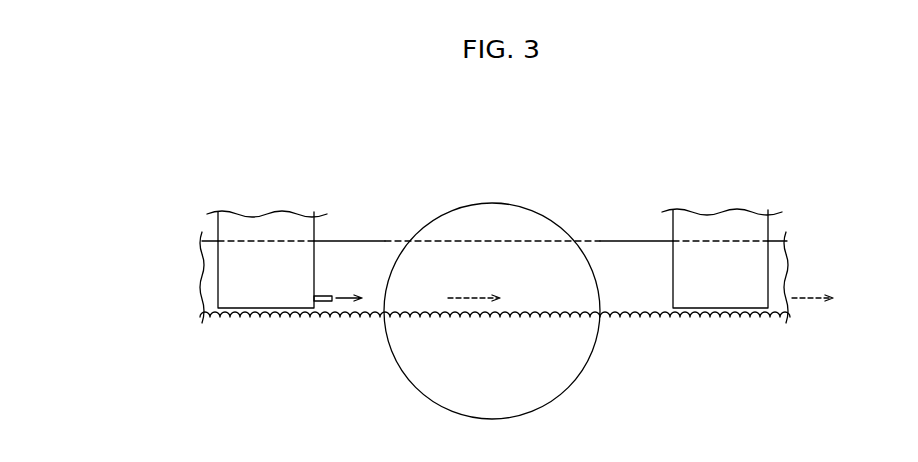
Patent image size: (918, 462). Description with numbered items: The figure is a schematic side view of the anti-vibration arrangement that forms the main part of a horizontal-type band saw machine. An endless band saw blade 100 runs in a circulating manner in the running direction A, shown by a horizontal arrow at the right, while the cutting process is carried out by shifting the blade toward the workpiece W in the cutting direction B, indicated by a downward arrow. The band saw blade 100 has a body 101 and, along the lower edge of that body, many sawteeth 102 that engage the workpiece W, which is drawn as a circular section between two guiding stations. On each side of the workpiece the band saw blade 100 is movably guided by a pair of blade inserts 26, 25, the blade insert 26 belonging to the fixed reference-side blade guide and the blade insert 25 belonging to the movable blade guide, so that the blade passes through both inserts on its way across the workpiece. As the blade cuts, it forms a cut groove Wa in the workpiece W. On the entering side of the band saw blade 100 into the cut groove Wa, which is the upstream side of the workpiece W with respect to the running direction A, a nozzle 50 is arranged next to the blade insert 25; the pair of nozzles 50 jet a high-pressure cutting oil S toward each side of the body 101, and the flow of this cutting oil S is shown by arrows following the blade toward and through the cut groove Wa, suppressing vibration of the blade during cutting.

The band saw blade 100 is at (638, 238).
The body of the band saw blade 101 is at (606, 250).
The sawteeth 102 is at (622, 318).
The blade insert 25 is at (317, 228).
The blade insert 26 is at (770, 228).
The nozzle 50 is at (318, 310).
The high-pressure cutting oil S is at (342, 311).
The workpiece W is at (497, 203).
The cut groove Wa is at (513, 243).
The cutting direction B is at (454, 238).
The running direction A is at (810, 304).